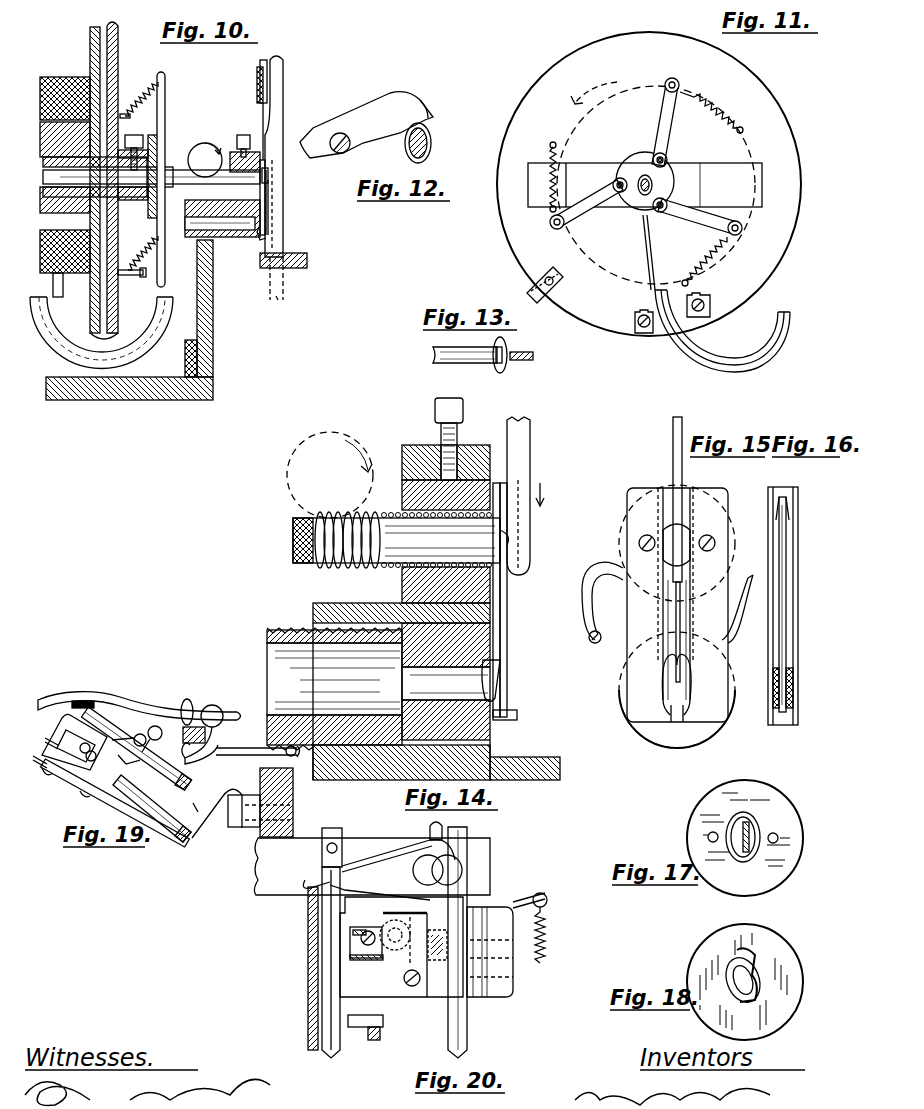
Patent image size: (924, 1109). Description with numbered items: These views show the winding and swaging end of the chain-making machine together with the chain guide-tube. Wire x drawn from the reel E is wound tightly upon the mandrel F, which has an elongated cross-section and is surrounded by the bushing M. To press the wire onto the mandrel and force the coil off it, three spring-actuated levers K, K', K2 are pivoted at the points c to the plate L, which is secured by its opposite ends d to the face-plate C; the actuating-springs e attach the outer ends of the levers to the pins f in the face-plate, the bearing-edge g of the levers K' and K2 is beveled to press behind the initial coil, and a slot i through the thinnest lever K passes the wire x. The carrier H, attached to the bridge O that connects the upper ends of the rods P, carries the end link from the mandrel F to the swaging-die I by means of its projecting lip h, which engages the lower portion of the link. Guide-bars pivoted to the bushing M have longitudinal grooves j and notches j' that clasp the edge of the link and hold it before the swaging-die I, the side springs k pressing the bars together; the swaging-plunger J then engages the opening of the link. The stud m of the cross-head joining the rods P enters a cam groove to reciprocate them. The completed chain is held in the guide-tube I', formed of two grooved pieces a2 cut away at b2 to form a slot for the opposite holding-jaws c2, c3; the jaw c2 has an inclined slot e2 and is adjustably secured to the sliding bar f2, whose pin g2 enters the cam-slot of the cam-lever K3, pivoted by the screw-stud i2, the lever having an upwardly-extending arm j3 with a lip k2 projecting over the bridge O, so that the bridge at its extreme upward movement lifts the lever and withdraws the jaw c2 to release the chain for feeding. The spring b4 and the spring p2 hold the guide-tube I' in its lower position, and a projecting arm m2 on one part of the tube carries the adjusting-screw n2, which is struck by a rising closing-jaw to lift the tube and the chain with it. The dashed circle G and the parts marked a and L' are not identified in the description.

In FIG. 10, the reel E is at (90, 36).
In FIG. 10, the face-plate C is at (118, 30).
In FIG. 11, the face-plate C is at (649, 184).
In FIG. 10, the carrier H is at (260, 62).
In FIG. 13, the carrier H is at (533, 356).
In FIG. 14, the carrier H is at (528, 468).
In FIG. 15, the carrier H is at (673, 450).
In FIG. 19, the carrier H is at (83, 691).
In FIG. 20, the carrier H is at (332, 832).
In FIG. 10, the bridge O is at (257, 82).
In FIG. 19, the bridge O is at (139, 697).
In FIG. 20, the bridge O is at (372, 866).
In FIG. 10, the rods P is at (287, 72).
In FIG. 10, the spring-actuated lever K2 is at (165, 100).
In FIG. 11, the spring-actuated lever K2 is at (672, 120).
In FIG. 10, the plate L is at (152, 149).
In FIG. 11, the plate L is at (710, 177).
In FIG. 10, the gear wheel G is at (210, 148).
In FIG. 14, the gear wheel G is at (334, 446).
In FIG. 10, the mandrel F is at (185, 172).
In FIG. 11, the mandrel F is at (638, 190).
In FIG. 12, the mandrel F is at (432, 146).
In FIG. 14, the mandrel F is at (396, 540).
In FIG. 17, the mandrel F is at (750, 835).
In FIG. 10, the bushing M is at (272, 148).
In FIG. 14, the bushing M is at (453, 454).
In FIG. 15, the bushing M is at (733, 533).
In FIG. 17, the bushing M is at (788, 812).
In FIG. 10, the projecting lip h is at (268, 176).
In FIG. 13, the projecting lip h is at (506, 350).
In FIG. 14, the projecting lip h is at (522, 553).
In FIG. 15, the projecting lip h is at (684, 573).
In FIG. 10, the stud m is at (268, 195).
In FIG. 14, the stud m is at (508, 592).
In FIG. 15, the stud m is at (680, 640).
In FIG. 16, the stud m is at (795, 610).
In FIG. 10, the longitudinal grooves j is at (281, 207).
In FIG. 14, the longitudinal grooves j is at (519, 600).
In FIG. 15, the longitudinal grooves j is at (673, 594).
In FIG. 16, the longitudinal grooves j is at (793, 604).
In FIG. 10, the notches j' is at (277, 225).
In FIG. 14, the notches j' is at (513, 689).
In FIG. 15, the notches j' is at (673, 688).
In FIG. 16, the notches j' is at (795, 685).
In FIG. 19, the notches j' is at (242, 803).
In FIG. 10, the spring-actuated lever K' is at (218, 214).
In FIG. 11, the spring-actuated lever K' is at (586, 201).
In FIG. 12, the spring-actuated lever K' is at (366, 125).
In FIG. 10, the swaging-die I is at (176, 320).
In FIG. 14, the swaging-die I is at (378, 701).
In FIG. 18, the swaging-die I is at (745, 982).
In FIG. 10, the actuating-springs e is at (141, 175).
In FIG. 11, the actuating-springs e is at (556, 166).
In FIG. 10, the pins f is at (125, 114).
In FIG. 11, the pins f is at (555, 144).
In FIG. 10, the ends of plate d is at (279, 304).
In FIG. 11, the ends of plate d is at (528, 176).
In FIG. 13, the ends of plate d is at (456, 353).
In FIG. 11, the bearing-edge g is at (652, 163).
In FIG. 12, the bearing-edge g is at (428, 118).
In FIG. 11, the pivot points c is at (618, 180).
In FIG. 11, the slot i is at (640, 215).
In FIG. 11, the wire x is at (652, 248).
In FIG. 11, the spring-actuated lever K is at (700, 222).
In FIG. 15, the side springs k is at (622, 600).
In FIG. 19, the cam-lever K3 is at (252, 748).
In FIG. 20, the cam-lever K3 is at (536, 896).
In FIG. 19, the grooved pieces a2 is at (63, 727).
In FIG. 20, the grooved pieces a2 is at (325, 870).
In FIG. 19, the pin a is at (47, 737).
In FIG. 19, the spring b4 is at (136, 735).
In FIG. 20, the spring b4 is at (370, 862).
In FIG. 19, the screw-stud i2 is at (155, 726).
In FIG. 20, the screw-stud i2 is at (548, 938).
In FIG. 19, the lip k2 is at (191, 708).
In FIG. 20, the lip k2 is at (444, 932).
In FIG. 19, the upwardly-extending arm j3 is at (212, 705).
In FIG. 20, the upwardly-extending arm j3 is at (430, 830).
In FIG. 19, the pin g2 is at (200, 750).
In FIG. 20, the pin g2 is at (425, 975).
In FIG. 19, the holding-jaw c2 is at (129, 764).
In FIG. 20, the holding-jaw c2 is at (366, 928).
In FIG. 19, the holding-jaw c3 is at (36, 756).
In FIG. 20, the holding-jaw c3 is at (320, 937).
In FIG. 19, the spring p2 is at (80, 760).
In FIG. 19, the guide-tube I' is at (137, 732).
In FIG. 20, the guide-tube I' is at (380, 860).
In FIG. 19, the bar L' is at (107, 803).
In FIG. 20, the projecting arm m2 is at (365, 1013).
In FIG. 20, the adjusting-screw n2 is at (386, 1036).
In FIG. 20, the inclined slot e2 is at (362, 938).
In FIG. 20, the sliding bar f2 is at (393, 950).
In FIG. 19, the cut-away b2 is at (152, 808).
In FIG. 20, the cut-away b2 is at (320, 962).
In FIG. 20, the swaging-plunger J is at (493, 902).